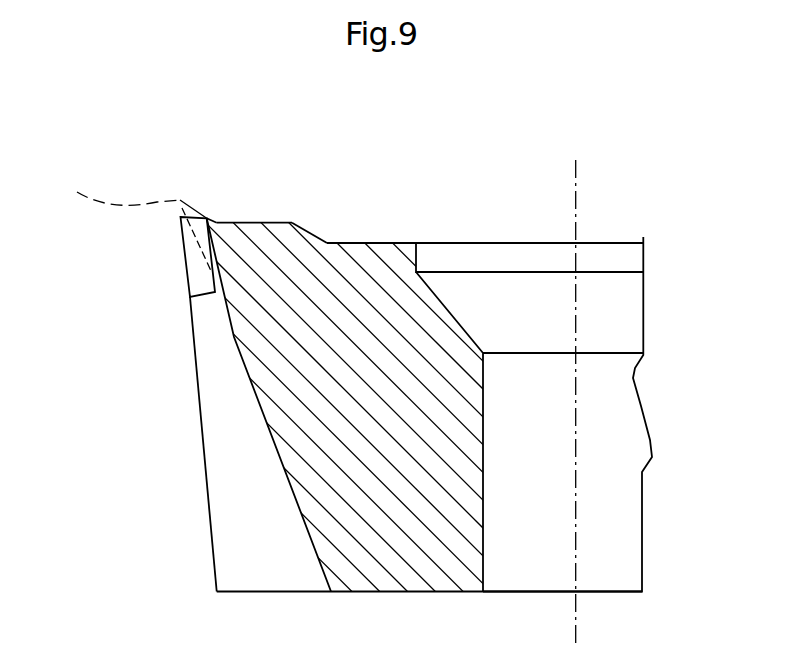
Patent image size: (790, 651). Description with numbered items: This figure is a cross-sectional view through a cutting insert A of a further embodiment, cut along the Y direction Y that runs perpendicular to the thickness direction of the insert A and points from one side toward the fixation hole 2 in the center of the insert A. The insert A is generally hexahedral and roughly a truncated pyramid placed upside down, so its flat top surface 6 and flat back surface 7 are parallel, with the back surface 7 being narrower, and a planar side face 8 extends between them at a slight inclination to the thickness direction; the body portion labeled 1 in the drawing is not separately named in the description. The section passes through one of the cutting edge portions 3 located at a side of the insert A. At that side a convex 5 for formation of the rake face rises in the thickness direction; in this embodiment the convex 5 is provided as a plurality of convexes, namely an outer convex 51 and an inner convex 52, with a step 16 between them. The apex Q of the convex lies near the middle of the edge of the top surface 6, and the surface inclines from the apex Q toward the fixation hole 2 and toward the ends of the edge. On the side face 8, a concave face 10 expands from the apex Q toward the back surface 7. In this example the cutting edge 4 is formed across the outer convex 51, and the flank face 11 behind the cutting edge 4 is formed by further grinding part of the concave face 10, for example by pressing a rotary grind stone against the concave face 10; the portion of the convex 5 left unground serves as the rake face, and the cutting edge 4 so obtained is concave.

The holder / shank 1 is at (462, 243).
The fixation hole 2 is at (485, 510).
The cutting edge portion 3 is at (181, 217).
The cutting edge 4 is at (150, 257).
The convex 5 is at (260, 182).
The top surface 6 is at (362, 243).
The back surface 7 is at (600, 594).
The side face 8 is at (205, 472).
The concave face 10 is at (287, 487).
The flank face 11 is at (211, 274).
The step 16 is at (263, 223).
The outer convex 51 is at (207, 219).
The inner convex 52 is at (311, 231).
The insert A is at (485, 134).
The apex Q is at (129, 197).
The Y direction Y is at (573, 388).